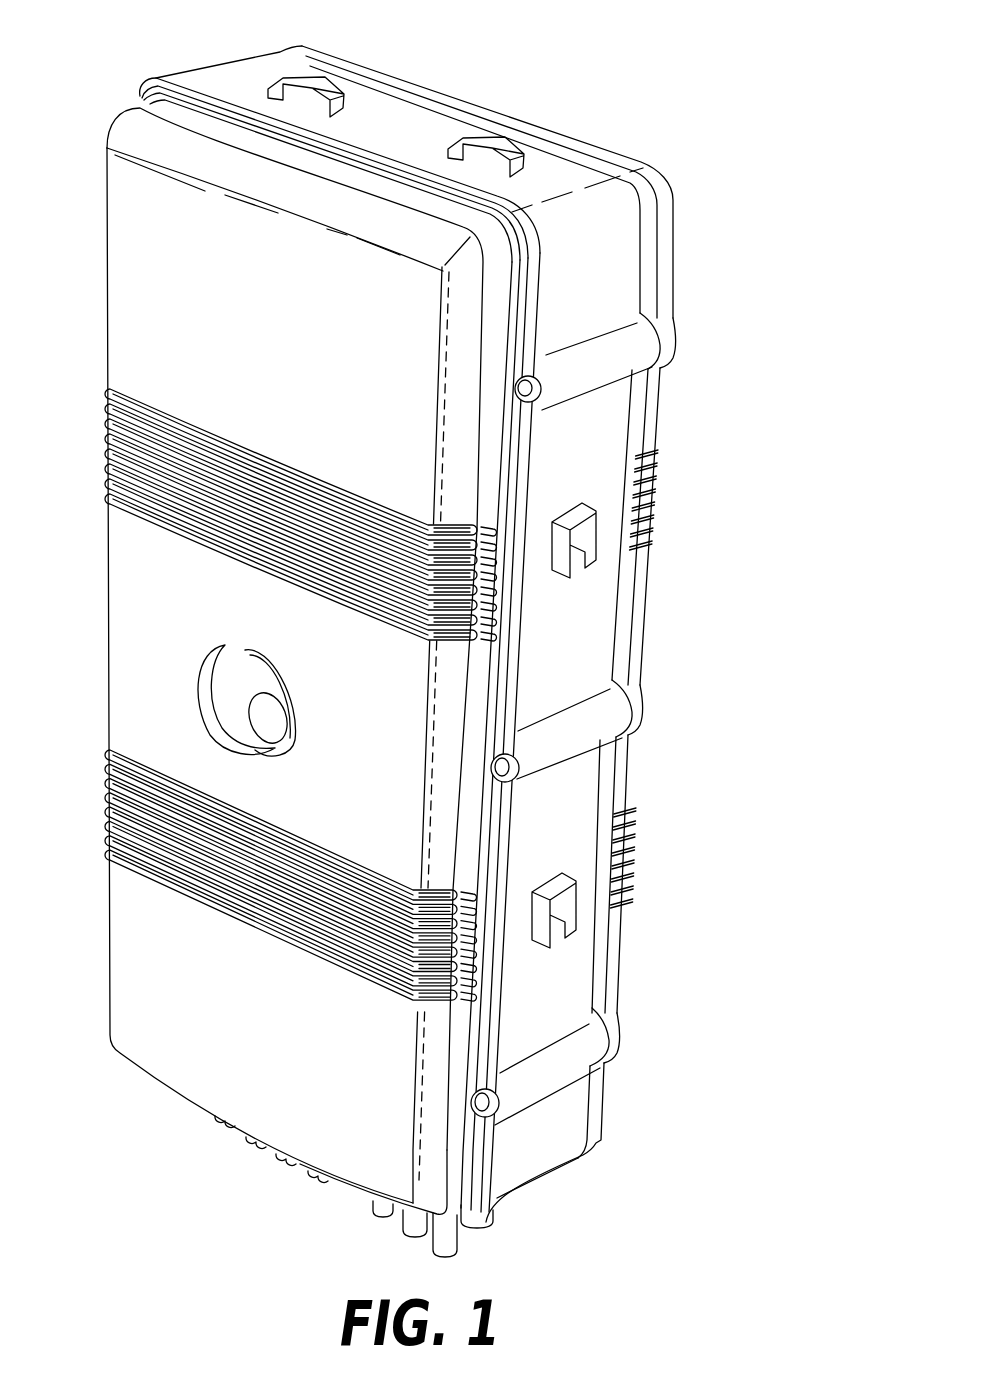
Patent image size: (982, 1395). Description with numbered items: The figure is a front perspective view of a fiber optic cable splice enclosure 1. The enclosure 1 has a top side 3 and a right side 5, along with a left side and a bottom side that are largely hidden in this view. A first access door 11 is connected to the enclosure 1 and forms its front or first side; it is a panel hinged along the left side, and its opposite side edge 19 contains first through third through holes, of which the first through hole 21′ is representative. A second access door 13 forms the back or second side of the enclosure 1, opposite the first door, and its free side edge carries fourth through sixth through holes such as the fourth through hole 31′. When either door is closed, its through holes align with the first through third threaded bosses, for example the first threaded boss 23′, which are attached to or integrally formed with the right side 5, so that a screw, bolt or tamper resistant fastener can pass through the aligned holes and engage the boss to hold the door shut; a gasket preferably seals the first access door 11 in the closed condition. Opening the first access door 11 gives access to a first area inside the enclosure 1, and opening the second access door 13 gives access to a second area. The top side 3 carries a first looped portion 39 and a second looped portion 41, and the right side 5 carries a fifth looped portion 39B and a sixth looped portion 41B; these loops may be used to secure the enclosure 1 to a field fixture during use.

The fiber optic cable splice enclosure 1 is at (758, 99).
The top side 3 is at (402, 139).
The right side 5 is at (568, 687).
The first access door 11 is at (273, 337).
The second access door 13 is at (677, 262).
The opposite side edge 19 is at (475, 846).
The first through hole 21′ is at (540, 393).
The first threaded boss 23′ is at (610, 374).
The fourth through hole 31′ is at (672, 348).
The first looped portion 39 is at (493, 146).
The fifth looped portion 39B is at (592, 549).
The second looped portion 41 is at (328, 88).
The sixth looped portion 41B is at (568, 908).